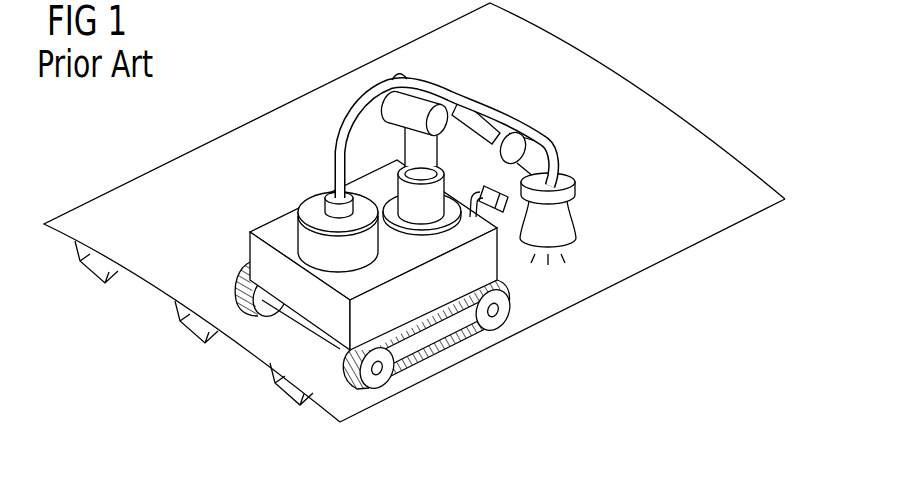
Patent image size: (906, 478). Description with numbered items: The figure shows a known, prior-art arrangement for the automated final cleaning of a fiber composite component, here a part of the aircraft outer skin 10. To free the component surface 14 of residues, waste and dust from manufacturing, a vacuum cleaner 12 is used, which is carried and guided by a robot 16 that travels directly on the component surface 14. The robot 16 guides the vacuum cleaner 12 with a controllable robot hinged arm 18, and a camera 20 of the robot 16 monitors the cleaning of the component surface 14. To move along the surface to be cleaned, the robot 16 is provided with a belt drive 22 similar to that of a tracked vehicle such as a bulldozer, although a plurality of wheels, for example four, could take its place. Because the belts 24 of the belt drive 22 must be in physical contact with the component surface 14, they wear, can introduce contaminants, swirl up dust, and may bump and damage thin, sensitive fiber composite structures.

The aircraft outer skin 10 is at (691, 129).
The vacuum cleaner 12 is at (303, 118).
The component surface 14 is at (665, 250).
The robot 16 is at (470, 230).
The robot hinged arm 18 is at (470, 110).
The camera 20 is at (483, 185).
The belt drive 22 is at (432, 355).
The belts 24 is at (238, 274).